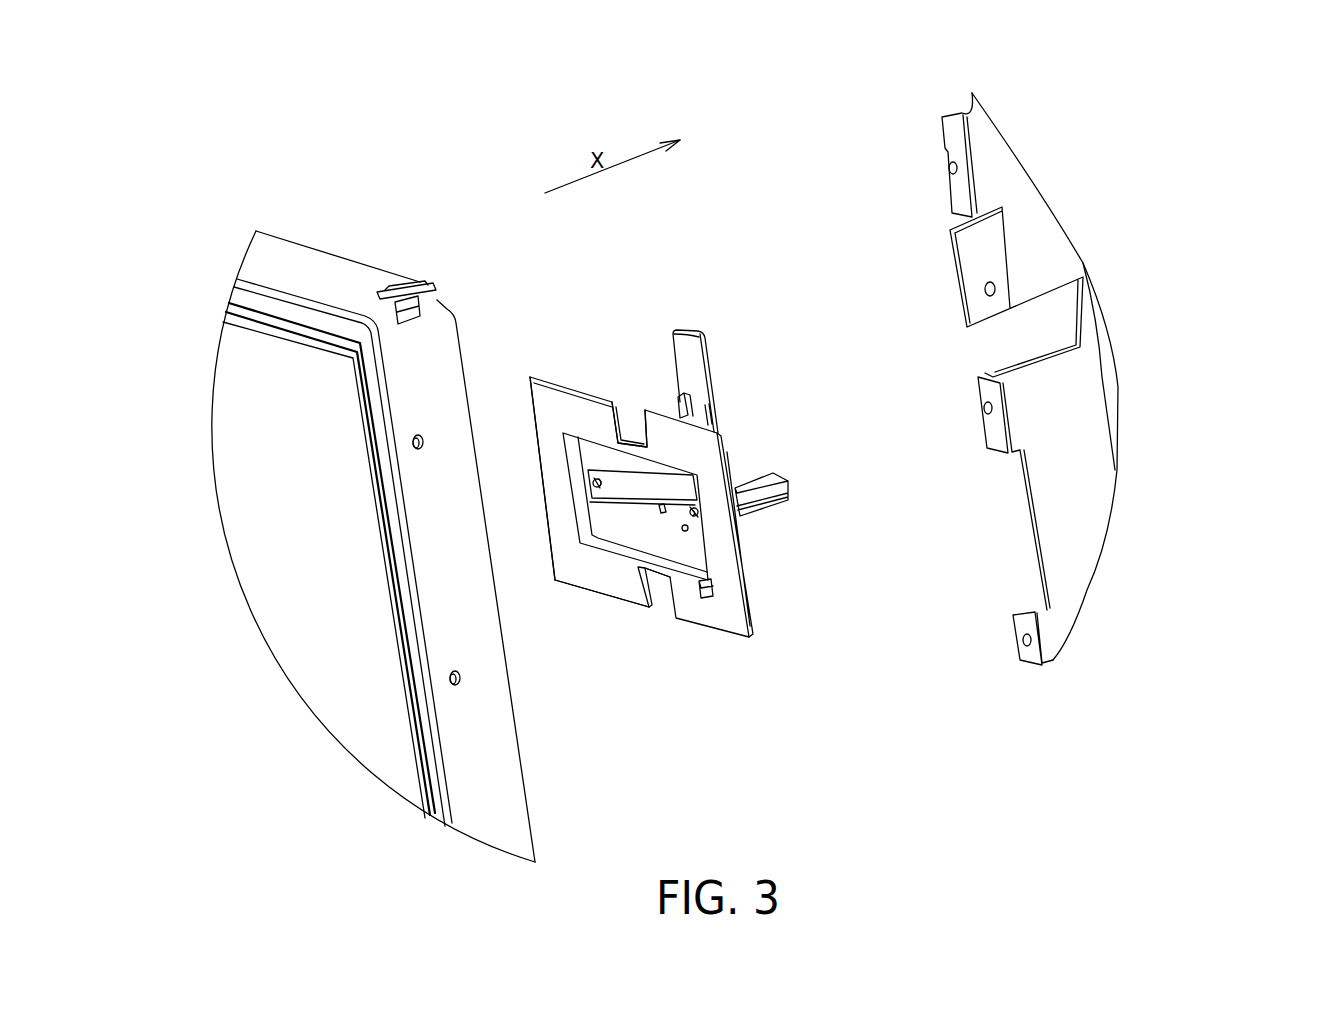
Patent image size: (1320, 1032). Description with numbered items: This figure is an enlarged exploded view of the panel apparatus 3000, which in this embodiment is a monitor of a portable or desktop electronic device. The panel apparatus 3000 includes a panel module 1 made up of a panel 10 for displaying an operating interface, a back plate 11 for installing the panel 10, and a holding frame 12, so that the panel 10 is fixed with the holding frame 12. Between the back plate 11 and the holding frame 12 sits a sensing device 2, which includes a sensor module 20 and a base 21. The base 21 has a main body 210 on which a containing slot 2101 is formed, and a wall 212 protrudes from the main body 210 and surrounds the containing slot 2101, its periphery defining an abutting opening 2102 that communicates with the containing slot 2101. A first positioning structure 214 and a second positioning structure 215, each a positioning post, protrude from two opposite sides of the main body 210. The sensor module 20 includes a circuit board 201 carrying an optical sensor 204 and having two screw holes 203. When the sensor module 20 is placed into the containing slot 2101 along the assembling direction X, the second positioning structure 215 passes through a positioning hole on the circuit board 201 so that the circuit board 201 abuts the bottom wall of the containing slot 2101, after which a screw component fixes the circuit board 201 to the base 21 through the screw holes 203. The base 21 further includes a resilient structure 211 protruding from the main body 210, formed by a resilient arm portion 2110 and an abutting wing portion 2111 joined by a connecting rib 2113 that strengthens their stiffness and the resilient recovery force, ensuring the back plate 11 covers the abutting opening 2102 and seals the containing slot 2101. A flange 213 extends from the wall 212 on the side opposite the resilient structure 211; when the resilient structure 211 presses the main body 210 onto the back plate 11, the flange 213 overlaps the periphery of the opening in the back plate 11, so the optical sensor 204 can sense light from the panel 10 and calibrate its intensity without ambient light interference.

The panel module 1 is at (473, 140).
The panel 10 is at (220, 372).
The back plate 11 is at (297, 256).
The holding frame 12 is at (1003, 142).
The sensing device 2 is at (680, 286).
The sensor module 20 is at (650, 510).
The base 21 is at (770, 623).
The circuit board 201 is at (617, 492).
The screw holes 203 is at (586, 485).
The optical sensor 204 is at (664, 512).
The main body 210 is at (632, 417).
The resilient structure 211 is at (805, 281).
The wall 212 is at (670, 580).
The flange 213 is at (722, 614).
The first positioning structure 214 is at (782, 478).
The second positioning structure 215 is at (596, 482).
The containing slot 2101 is at (637, 542).
The abutting opening 2102 is at (575, 513).
The resilient arm portion 2110 is at (696, 405).
The abutting wing portion 2111 is at (682, 336).
The connecting rib 2113 is at (712, 420).
The panel apparatus 3000 is at (1137, 192).